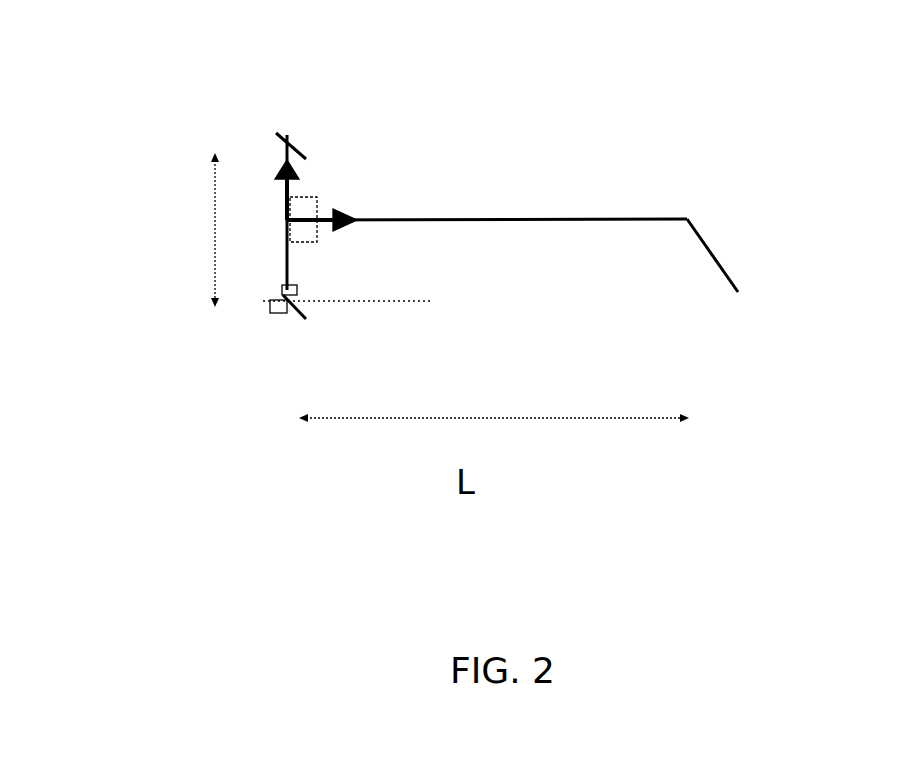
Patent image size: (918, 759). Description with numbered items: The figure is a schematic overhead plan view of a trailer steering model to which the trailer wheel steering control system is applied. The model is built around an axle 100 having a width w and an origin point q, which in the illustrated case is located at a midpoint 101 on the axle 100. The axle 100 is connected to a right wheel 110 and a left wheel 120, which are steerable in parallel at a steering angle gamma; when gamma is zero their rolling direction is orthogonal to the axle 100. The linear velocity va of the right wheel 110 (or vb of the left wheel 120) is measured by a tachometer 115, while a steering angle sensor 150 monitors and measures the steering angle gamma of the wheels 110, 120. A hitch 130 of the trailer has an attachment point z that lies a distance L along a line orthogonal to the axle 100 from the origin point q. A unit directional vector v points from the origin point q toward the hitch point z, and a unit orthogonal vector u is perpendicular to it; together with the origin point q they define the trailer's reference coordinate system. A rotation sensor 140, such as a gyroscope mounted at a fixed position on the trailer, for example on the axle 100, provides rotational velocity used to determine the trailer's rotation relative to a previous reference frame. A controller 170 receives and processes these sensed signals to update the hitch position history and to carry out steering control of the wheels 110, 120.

The axle 100 is at (287, 262).
The midpoint 101 is at (283, 215).
The right wheel 110 is at (282, 288).
The tachometer 115 is at (280, 283).
The left wheel 120 is at (270, 133).
The hitch 130 is at (688, 223).
The rotation sensor 140 is at (315, 238).
The steering angle sensor 150 is at (268, 306).
The controller 170 is at (307, 192).